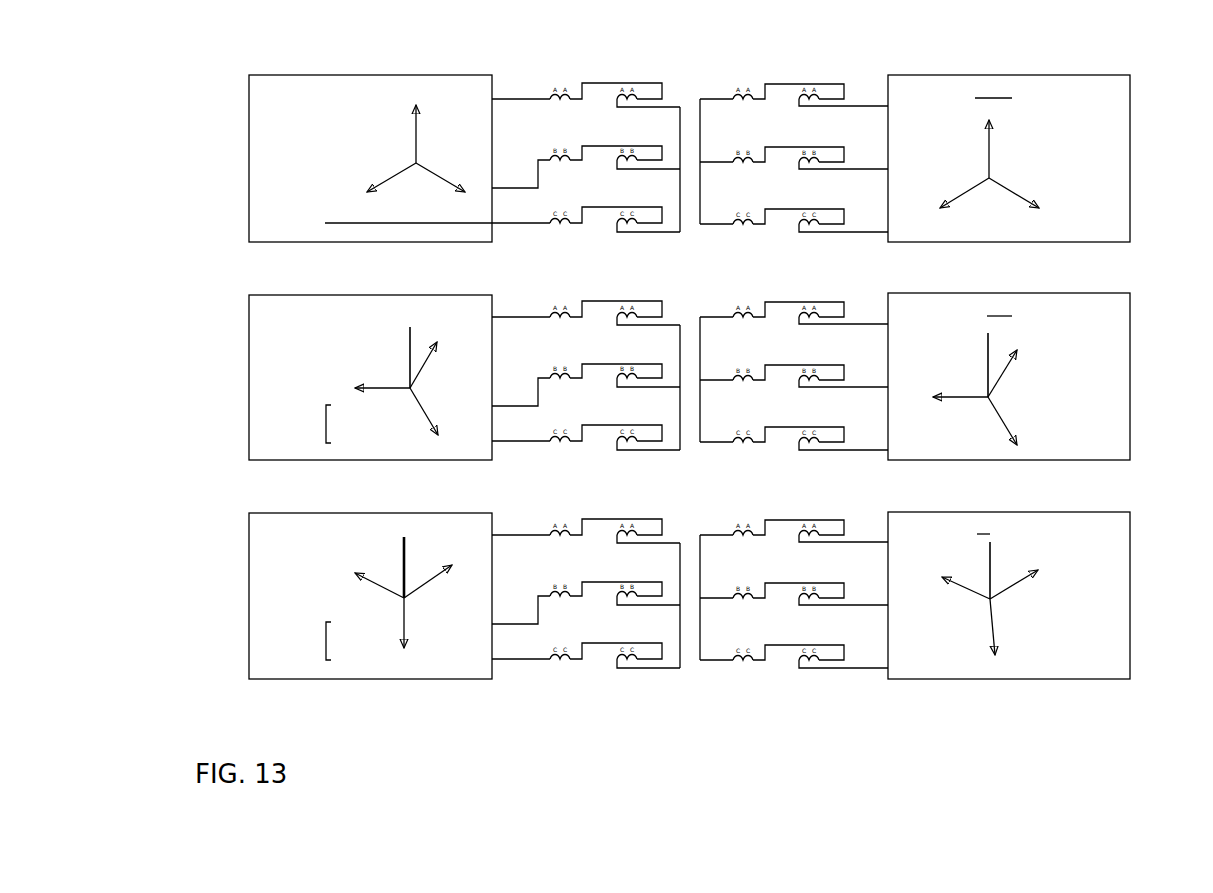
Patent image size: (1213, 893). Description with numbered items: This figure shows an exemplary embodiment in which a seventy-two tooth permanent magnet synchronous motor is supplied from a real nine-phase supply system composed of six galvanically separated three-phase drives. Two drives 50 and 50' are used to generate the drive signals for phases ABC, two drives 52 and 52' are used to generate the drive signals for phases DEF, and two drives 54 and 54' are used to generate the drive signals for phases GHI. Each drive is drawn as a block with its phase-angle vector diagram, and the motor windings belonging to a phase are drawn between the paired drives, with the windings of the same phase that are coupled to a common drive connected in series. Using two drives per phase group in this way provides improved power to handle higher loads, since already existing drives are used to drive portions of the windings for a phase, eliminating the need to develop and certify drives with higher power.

The drive 50 is at (337, 154).
The drive 50' is at (1041, 138).
The drive 52 is at (337, 377).
The drive 52' is at (1041, 367).
The drive 54 is at (337, 596).
The drive 54' is at (1041, 586).